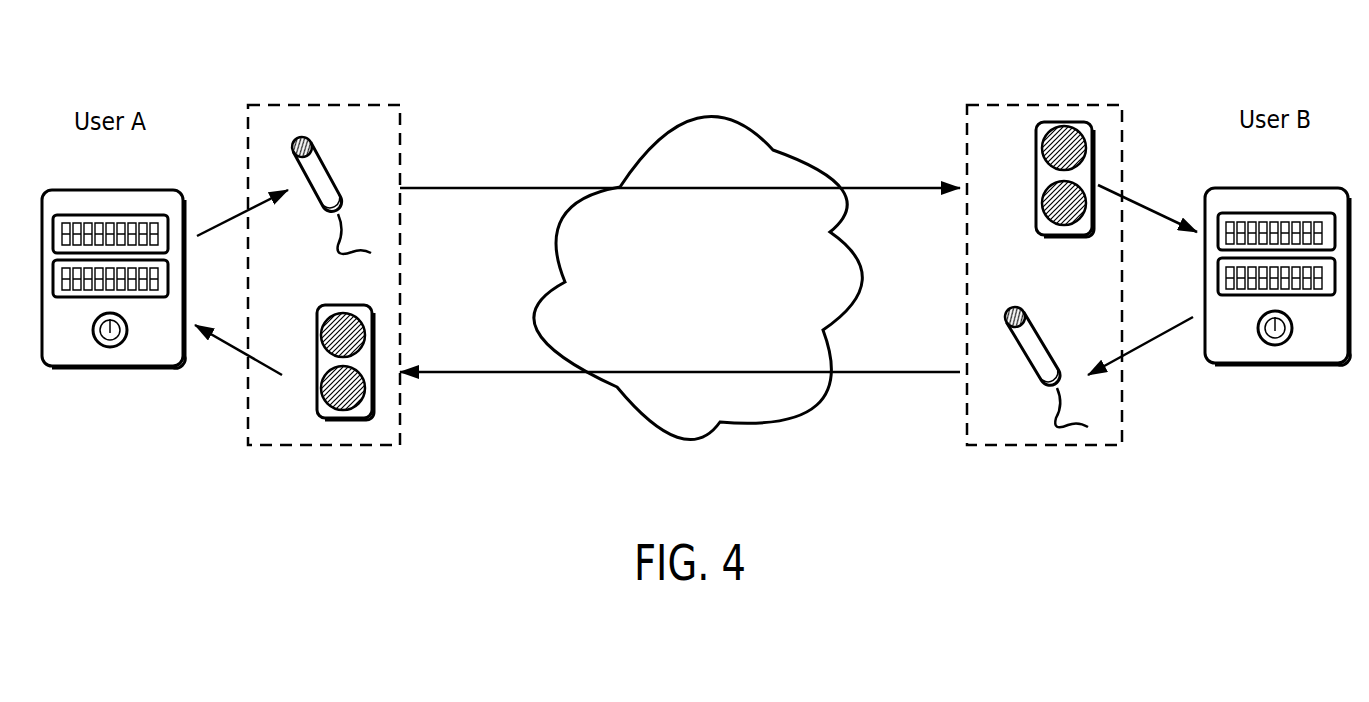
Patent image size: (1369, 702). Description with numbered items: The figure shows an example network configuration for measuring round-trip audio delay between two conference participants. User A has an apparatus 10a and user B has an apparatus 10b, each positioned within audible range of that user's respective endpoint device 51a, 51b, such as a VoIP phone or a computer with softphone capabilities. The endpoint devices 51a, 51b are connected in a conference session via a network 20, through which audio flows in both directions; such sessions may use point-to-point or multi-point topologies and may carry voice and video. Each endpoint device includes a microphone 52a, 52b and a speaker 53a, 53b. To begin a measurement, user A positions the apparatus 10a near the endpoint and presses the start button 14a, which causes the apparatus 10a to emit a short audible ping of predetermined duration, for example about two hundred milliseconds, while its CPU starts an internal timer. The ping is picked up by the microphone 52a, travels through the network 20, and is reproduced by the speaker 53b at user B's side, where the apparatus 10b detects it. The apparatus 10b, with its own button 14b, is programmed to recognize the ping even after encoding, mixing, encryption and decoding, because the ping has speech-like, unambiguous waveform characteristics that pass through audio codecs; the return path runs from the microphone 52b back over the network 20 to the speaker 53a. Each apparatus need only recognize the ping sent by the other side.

The apparatus 10a is at (105, 190).
The apparatus 10b is at (1277, 188).
The start button 14a is at (110, 347).
The button 14b is at (1275, 345).
The network 20 is at (727, 292).
The endpoint device 51a is at (317, 105).
The endpoint device 51b is at (1053, 105).
The microphone 52a is at (333, 185).
The microphone 52b is at (1047, 352).
The speaker 53a is at (315, 318).
The speaker 53b is at (1035, 203).